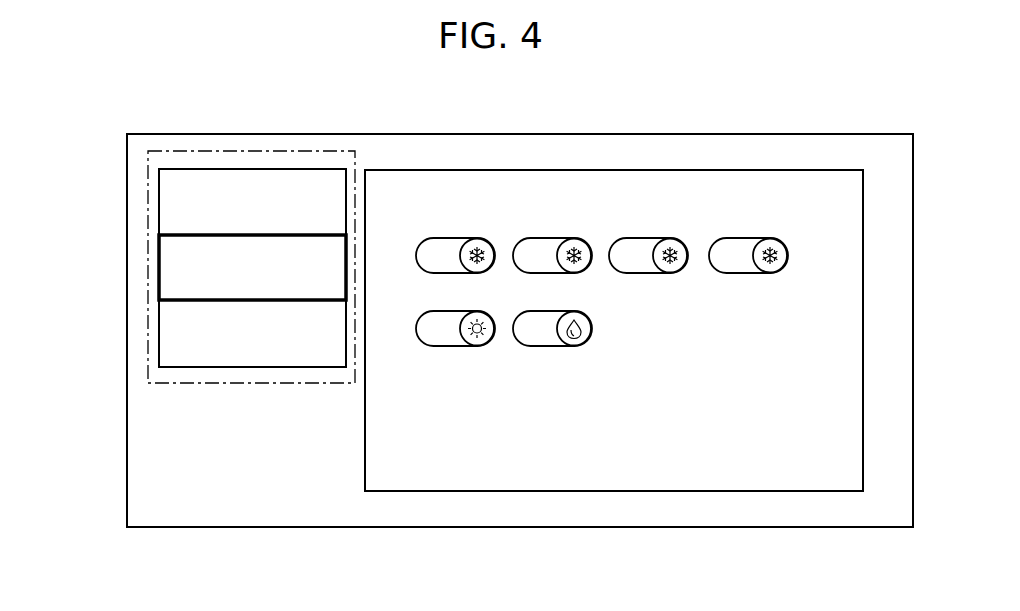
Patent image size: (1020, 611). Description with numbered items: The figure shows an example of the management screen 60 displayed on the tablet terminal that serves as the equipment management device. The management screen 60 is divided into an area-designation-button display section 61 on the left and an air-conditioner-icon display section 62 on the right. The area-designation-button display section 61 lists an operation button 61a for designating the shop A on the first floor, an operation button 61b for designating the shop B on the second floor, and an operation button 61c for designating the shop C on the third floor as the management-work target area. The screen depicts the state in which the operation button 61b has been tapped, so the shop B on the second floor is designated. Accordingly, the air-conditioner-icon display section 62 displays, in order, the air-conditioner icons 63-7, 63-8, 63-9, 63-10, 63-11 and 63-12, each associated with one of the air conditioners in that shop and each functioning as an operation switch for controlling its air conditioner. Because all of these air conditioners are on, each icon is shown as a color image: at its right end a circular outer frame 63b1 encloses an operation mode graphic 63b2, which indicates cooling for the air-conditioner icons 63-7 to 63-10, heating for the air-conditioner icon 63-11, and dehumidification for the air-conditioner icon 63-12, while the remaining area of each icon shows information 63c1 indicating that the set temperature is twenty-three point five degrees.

The management screen 60 is at (772, 134).
The area-designation-button display section 61 is at (208, 151).
The operation button 61a is at (159, 206).
The operation button 61b is at (159, 270).
The operation button 61c is at (159, 338).
The air-conditioner-icon display section 62 is at (772, 170).
The air-conditioner icon 63-7 is at (435, 238).
The air-conditioner icon 63-8 is at (531, 238).
The air-conditioner icon 63-9 is at (628, 238).
The air-conditioner icon 63-10 is at (732, 313).
The air-conditioner icon 63-11 is at (435, 311).
The air-conditioner icon 63-12 is at (531, 311).
The set temperature information 63c1 is at (729, 266).
The circular outer frame 63b1 is at (755, 268).
The operation mode graphic 63b2 is at (773, 262).